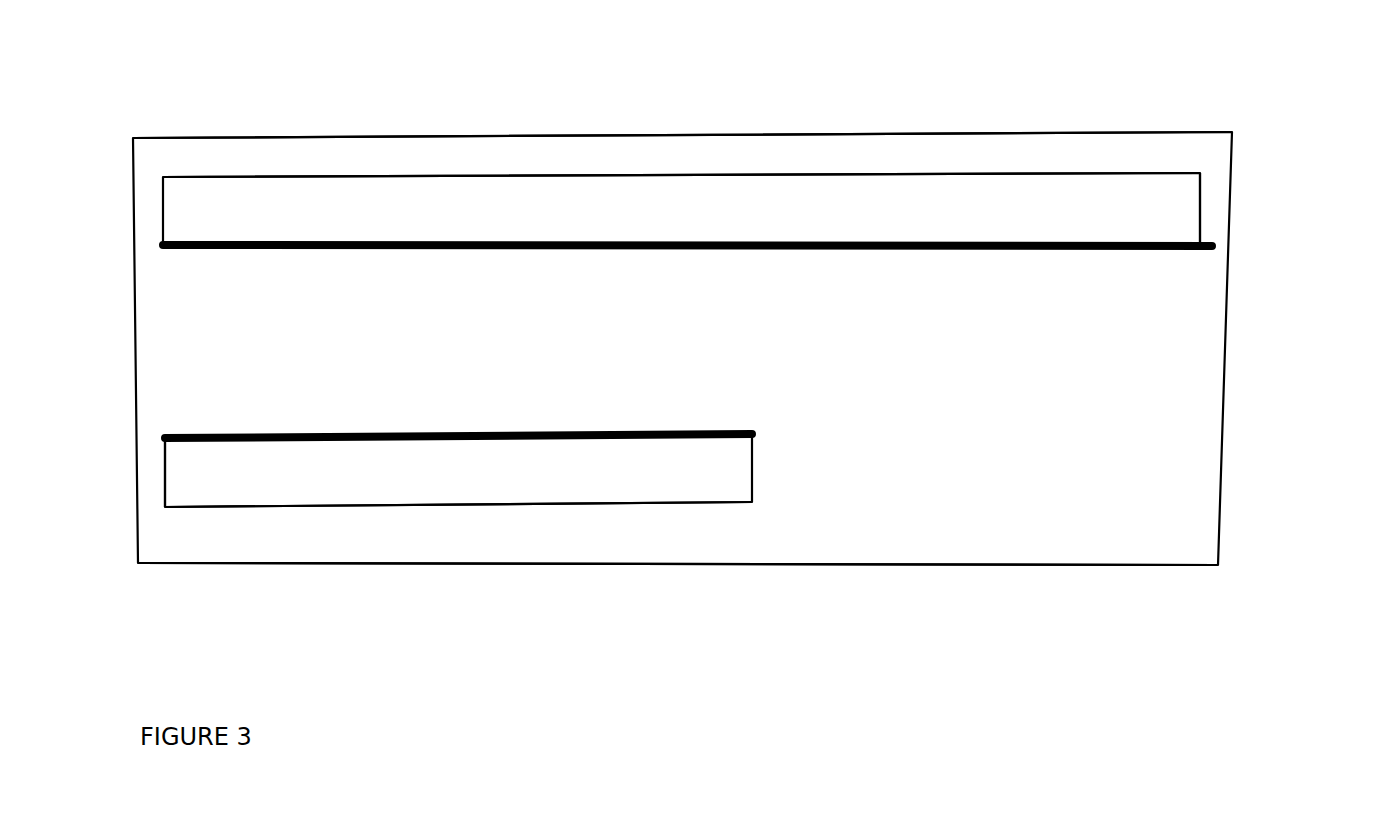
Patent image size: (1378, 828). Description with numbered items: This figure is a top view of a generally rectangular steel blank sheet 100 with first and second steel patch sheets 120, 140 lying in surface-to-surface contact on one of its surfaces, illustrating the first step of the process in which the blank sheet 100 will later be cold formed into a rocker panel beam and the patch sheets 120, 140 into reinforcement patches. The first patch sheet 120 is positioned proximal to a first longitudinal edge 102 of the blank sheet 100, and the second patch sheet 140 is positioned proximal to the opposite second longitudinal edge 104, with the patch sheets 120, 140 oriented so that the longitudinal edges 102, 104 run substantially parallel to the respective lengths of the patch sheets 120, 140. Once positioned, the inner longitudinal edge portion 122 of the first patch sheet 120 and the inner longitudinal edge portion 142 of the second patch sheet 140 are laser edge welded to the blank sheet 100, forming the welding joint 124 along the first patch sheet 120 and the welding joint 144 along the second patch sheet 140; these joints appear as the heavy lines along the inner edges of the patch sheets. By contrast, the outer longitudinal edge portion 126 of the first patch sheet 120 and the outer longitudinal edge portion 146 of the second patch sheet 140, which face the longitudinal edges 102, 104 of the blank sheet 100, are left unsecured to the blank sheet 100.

The steel blank sheet 100 is at (1167, 442).
The first longitudinal edge 102 is at (275, 137).
The second longitudinal edge 104 is at (947, 565).
The first steel patch sheet 120 is at (543, 220).
The inner longitudinal edge portion 122 is at (1130, 242).
The welding joint 124 is at (843, 248).
The outer longitudinal edge portion 126 is at (1033, 175).
The second steel patch sheet 140 is at (618, 473).
The inner longitudinal edge portion 142 is at (162, 447).
The welding joint 144 is at (370, 435).
The outer longitudinal edge portion 146 is at (355, 507).